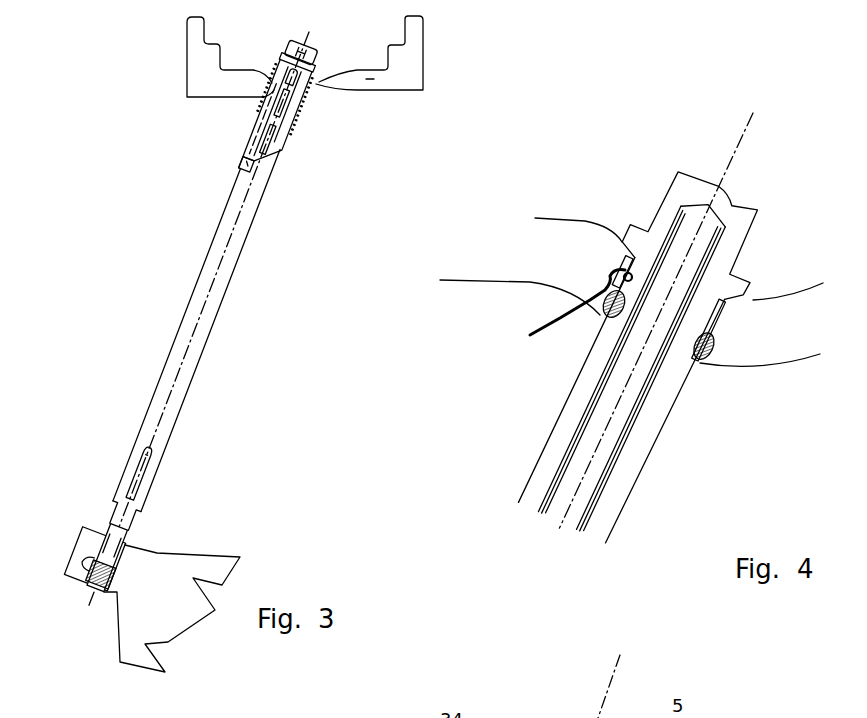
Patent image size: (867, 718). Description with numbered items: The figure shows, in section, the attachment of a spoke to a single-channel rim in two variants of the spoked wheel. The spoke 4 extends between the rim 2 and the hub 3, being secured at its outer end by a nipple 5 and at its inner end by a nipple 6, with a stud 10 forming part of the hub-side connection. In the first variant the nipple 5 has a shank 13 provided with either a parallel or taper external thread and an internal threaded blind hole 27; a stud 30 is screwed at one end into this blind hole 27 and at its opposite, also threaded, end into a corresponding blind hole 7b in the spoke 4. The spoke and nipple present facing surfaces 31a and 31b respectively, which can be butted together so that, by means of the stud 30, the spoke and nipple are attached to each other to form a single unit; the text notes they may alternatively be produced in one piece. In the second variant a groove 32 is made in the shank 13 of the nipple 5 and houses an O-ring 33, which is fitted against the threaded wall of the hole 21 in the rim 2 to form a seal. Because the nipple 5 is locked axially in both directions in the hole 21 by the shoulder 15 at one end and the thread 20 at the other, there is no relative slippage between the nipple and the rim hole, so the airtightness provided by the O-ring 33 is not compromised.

In FIG. 4, the rim 2 is at (530, 265).
In FIG. 3, the hub 3 is at (200, 553).
In FIG. 3, the spoke 4 is at (207, 246).
In FIG. 4, the spoke 4 is at (528, 468).
In FIG. 3, the nipple 5 is at (307, 78).
In FIG. 4, the nipple 5 is at (648, 200).
In FIG. 3, the nipple 6 is at (87, 577).
In FIG. 3, the threaded blind hole 7b is at (258, 183).
In FIG. 4, the stud 10 is at (610, 445).
In FIG. 3, the shank 13 is at (258, 108).
In FIG. 4, the shoulder 15 is at (742, 293).
In FIG. 4, the thread 20 is at (600, 340).
In FIG. 4, the hole 21 is at (568, 306).
In FIG. 3, the threaded blind hole 27 is at (303, 107).
In FIG. 3, the stud 30 is at (277, 160).
In FIG. 3, the facing surface 31a is at (292, 128).
In FIG. 3, the facing surface 31b is at (293, 120).
In FIG. 4, the groove 32 is at (712, 328).
In FIG. 4, the O-ring 33 is at (703, 370).